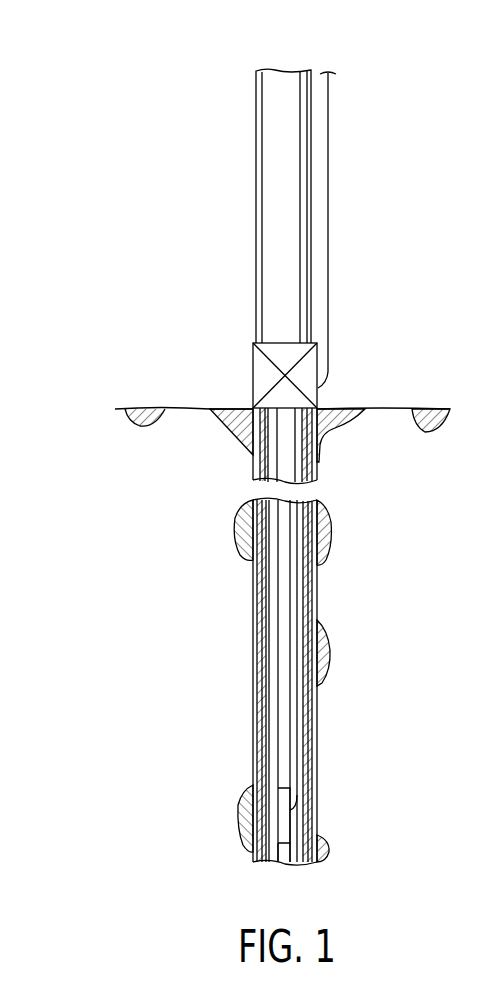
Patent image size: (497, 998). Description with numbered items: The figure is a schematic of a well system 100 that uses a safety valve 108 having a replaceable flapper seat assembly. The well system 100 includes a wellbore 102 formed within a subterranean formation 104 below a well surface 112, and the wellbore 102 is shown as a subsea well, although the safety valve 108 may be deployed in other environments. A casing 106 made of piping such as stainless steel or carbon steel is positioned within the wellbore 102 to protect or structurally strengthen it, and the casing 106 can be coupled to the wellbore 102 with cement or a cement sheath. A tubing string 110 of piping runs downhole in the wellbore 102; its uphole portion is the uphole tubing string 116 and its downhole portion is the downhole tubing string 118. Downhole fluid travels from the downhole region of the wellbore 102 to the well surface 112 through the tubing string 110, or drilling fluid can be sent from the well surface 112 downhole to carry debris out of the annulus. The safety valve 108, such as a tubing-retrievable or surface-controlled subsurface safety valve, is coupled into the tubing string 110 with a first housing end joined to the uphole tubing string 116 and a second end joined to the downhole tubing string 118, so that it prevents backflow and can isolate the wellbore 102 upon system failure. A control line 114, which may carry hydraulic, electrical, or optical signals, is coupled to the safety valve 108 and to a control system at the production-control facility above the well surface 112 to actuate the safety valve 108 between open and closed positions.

The well system 100 is at (102, 104).
The wellbore 102 is at (357, 605).
The subterranean formation 104 is at (240, 530).
The casing 106 is at (270, 728).
The safety valve 108 is at (285, 820).
The tubing string 110 is at (275, 612).
The well surface 112 is at (380, 409).
The control line 114 is at (296, 745).
The uphole tubing string 116 is at (290, 702).
The downhole tubing string 118 is at (282, 850).